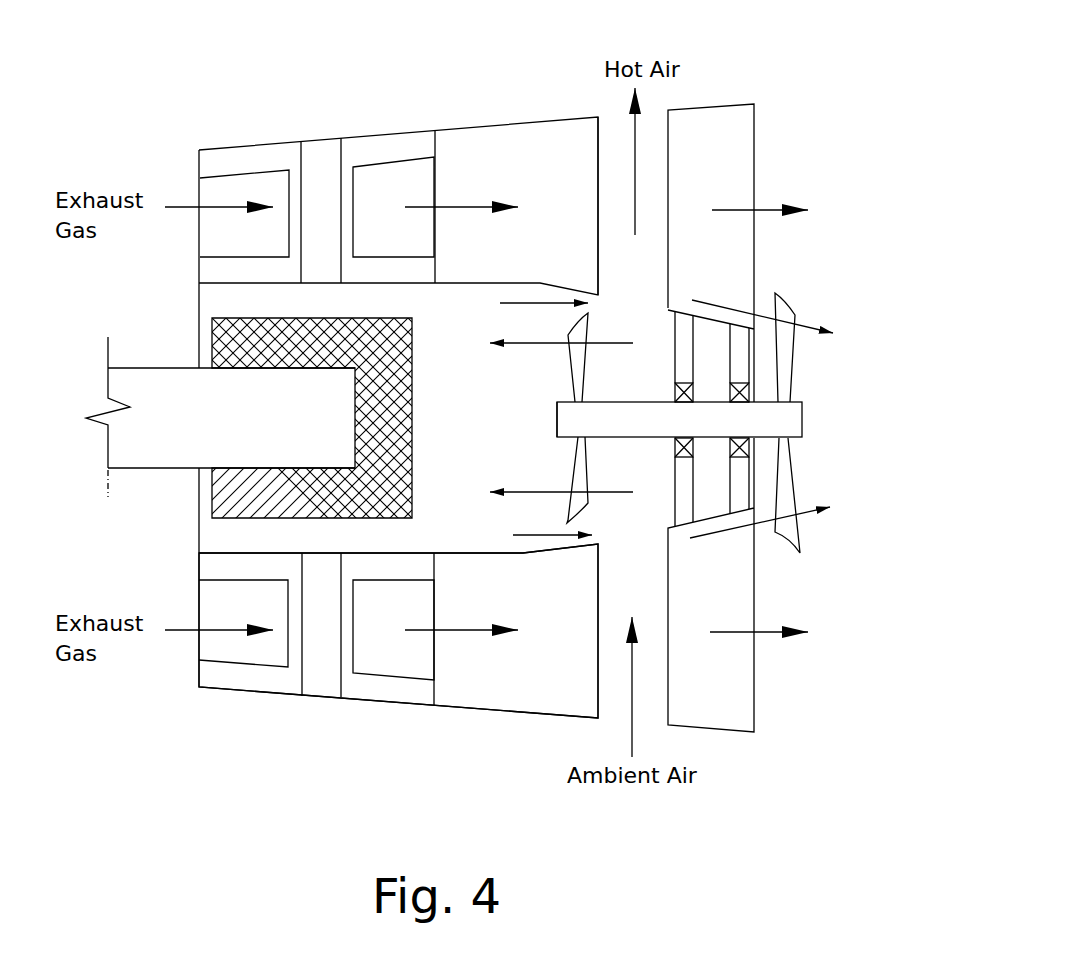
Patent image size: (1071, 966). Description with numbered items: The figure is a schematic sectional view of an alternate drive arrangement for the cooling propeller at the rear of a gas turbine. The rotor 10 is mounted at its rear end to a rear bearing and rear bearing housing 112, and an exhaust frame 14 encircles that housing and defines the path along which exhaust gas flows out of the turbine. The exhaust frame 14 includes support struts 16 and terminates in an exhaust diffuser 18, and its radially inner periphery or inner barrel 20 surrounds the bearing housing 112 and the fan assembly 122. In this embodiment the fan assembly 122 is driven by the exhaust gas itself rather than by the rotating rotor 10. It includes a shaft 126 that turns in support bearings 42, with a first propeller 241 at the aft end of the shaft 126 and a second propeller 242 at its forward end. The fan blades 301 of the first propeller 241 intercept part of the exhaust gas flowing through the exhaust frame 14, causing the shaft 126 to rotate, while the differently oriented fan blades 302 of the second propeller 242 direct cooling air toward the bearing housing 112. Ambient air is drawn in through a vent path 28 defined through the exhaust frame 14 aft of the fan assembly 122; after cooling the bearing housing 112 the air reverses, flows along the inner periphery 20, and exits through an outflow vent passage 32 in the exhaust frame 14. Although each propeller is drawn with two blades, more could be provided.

The rotor 10 is at (138, 365).
The exhaust frame 14 is at (200, 165).
The support struts 16 is at (350, 170).
The exhaust diffuser 18 is at (465, 125).
The inner barrel 20 is at (521, 552).
The vent path 28 is at (668, 690).
The outflow vent passage 32 is at (597, 165).
The support bearings 42 is at (735, 392).
The rear bearing housing 112 is at (215, 318).
The fan assembly 122 is at (545, 432).
The shaft 126 is at (610, 415).
The first propeller 241 is at (815, 460).
The second propeller 242 is at (552, 387).
The fan blades 301 is at (787, 493).
The fan blades 302 is at (580, 488).